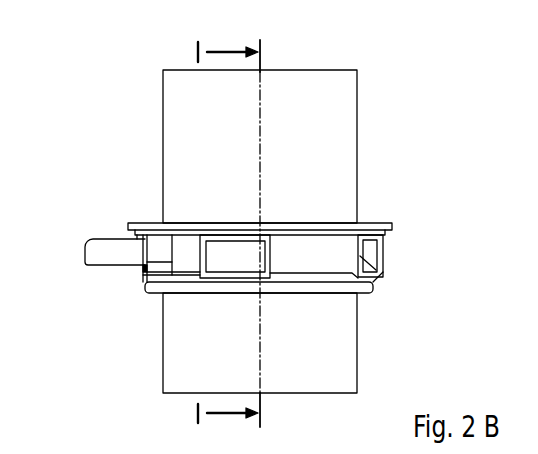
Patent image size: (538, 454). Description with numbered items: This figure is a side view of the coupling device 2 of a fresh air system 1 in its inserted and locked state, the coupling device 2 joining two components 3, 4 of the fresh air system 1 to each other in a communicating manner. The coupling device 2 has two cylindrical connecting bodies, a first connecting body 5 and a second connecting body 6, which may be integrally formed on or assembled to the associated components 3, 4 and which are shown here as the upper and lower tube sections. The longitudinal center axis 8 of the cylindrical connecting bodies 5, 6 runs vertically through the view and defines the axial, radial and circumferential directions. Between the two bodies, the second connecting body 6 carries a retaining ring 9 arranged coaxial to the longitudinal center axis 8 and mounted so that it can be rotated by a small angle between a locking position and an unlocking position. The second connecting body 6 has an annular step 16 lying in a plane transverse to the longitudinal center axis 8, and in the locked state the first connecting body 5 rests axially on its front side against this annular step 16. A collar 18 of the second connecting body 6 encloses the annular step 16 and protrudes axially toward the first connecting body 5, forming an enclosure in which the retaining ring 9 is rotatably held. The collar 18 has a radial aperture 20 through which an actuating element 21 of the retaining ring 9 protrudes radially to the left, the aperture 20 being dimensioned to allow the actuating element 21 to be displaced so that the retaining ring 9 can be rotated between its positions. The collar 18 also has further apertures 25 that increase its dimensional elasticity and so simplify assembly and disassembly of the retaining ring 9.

The fresh air system 1 is at (262, 226).
The coupling device 2 is at (262, 233).
The component 3 is at (278, 229).
The component 4 is at (278, 349).
The first connecting body 5 is at (172, 122).
The second connecting body 6 is at (172, 357).
The longitudinal center axis 8 is at (268, 148).
The retaining ring 9 is at (218, 249).
The annular step 16 is at (365, 293).
The collar 18 is at (388, 250).
The radial aperture 20 is at (175, 260).
The actuating element 21 is at (103, 242).
The further apertures 25 is at (263, 258).